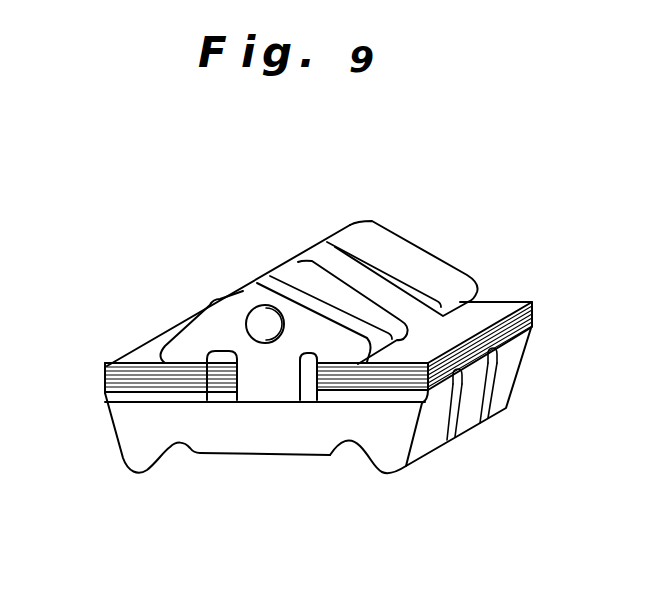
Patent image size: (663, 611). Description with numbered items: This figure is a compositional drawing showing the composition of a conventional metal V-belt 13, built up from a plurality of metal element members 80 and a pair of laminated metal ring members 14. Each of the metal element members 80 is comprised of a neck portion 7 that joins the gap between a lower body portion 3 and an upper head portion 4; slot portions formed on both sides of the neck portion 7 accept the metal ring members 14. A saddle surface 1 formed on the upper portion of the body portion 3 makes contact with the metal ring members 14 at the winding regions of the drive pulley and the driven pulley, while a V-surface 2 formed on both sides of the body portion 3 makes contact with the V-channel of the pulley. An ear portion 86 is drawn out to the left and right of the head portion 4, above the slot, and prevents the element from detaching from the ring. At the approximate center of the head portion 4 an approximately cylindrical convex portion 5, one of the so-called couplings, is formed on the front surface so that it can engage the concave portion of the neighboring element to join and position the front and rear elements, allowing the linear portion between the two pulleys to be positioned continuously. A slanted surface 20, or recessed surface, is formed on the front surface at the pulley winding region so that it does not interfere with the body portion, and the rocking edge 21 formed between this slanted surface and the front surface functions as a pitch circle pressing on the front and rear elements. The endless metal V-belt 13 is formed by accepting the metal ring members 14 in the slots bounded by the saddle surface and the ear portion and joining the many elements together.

The metal V-belt 13 is at (487, 155).
The metal ring members 14 is at (153, 344).
The metal element members 80 is at (276, 264).
The convex portion 5 is at (247, 315).
The head portion 4 is at (264, 299).
The saddle surface 1 is at (150, 376).
The V-surface 2 is at (121, 458).
The body portion 3 is at (250, 440).
The neck portion 7 is at (262, 388).
The ear portion 86 is at (368, 353).
The slanted surface 20 is at (390, 470).
The rocking edge 21 is at (398, 404).